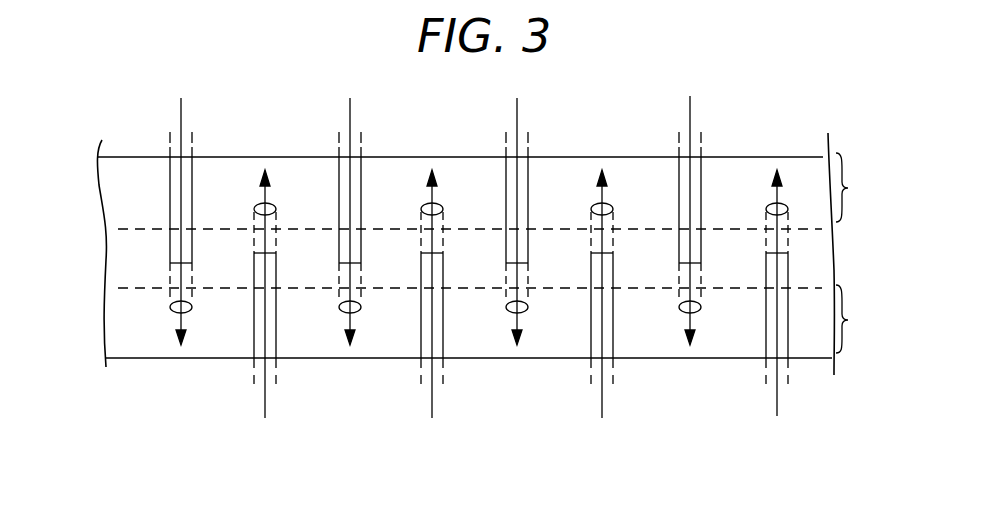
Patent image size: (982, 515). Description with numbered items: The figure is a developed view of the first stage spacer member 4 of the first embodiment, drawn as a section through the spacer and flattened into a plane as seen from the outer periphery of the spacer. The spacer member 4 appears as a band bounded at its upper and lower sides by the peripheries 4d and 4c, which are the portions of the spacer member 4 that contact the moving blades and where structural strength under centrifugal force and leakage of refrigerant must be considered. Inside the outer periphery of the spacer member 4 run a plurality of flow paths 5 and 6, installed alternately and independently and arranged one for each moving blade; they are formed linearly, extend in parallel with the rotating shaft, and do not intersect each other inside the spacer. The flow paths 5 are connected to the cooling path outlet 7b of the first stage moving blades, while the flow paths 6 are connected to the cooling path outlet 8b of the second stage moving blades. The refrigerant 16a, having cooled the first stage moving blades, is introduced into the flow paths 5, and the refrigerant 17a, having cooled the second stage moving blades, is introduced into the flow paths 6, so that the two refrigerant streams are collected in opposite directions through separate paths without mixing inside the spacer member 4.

The first stage spacer member 4 is at (452, 267).
The periphery of the spacer member 4c is at (805, 370).
The periphery of the spacer member 4d is at (809, 152).
The flow path 5 is at (260, 294).
The flow path 6 is at (183, 211).
The cooling path outlet of the first stage moving blades 7b is at (443, 368).
The cooling path outlet of the second stage moving blades 8b is at (361, 152).
The refrigerant 16a is at (265, 383).
The refrigerant 17a is at (181, 122).